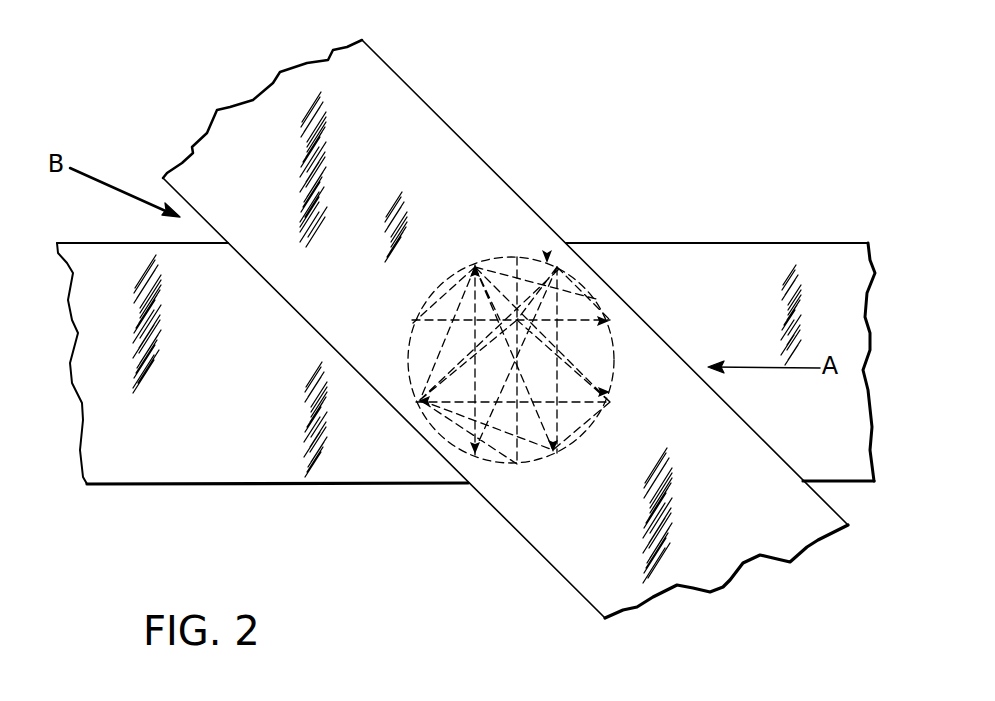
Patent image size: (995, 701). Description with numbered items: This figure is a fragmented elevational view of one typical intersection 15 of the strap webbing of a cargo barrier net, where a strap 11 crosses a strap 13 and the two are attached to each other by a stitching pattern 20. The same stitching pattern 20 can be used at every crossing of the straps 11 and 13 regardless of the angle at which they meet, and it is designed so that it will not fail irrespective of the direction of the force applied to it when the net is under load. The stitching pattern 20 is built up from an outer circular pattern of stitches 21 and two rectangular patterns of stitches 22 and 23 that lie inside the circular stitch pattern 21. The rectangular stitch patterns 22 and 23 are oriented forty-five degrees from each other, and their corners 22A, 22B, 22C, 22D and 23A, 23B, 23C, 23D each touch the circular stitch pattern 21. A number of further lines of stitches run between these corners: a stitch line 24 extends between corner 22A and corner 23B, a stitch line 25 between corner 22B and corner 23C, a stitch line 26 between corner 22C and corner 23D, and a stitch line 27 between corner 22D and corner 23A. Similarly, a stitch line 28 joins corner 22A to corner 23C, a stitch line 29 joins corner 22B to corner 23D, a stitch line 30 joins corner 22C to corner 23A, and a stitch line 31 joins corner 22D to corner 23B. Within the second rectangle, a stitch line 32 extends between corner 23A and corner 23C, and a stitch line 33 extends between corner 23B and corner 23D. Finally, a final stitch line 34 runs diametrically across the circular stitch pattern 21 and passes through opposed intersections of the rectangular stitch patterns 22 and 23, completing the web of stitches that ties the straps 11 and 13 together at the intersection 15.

The strap 11 is at (343, 88).
The strap 13 is at (120, 455).
The intersection 15 is at (460, 486).
The stitching pattern 20 is at (548, 258).
The circular pattern of stitches 21 is at (428, 300).
The rectangular pattern of stitches 22 is at (470, 340).
The corner 22A is at (558, 268).
The corner 22B is at (412, 320).
The corner 22C is at (475, 458).
The corner 22D is at (612, 402).
The rectangular pattern of stitches 23 is at (470, 430).
The corner 23A is at (475, 265).
The corner 23B is at (453, 400).
The corner 23C is at (578, 443).
The corner 23D is at (580, 318).
The stitch line 24 is at (477, 340).
The stitch line 25 is at (441, 338).
The stitch line 26 is at (516, 440).
The stitch line 27 is at (607, 404).
The stitch line 28 is at (572, 300).
The stitch line 29 is at (468, 326).
The stitch line 30 is at (468, 433).
The stitch line 31 is at (533, 450).
The stitch line 32 is at (475, 355).
The stitch line 33 is at (510, 430).
The final stitch line 34 is at (575, 308).